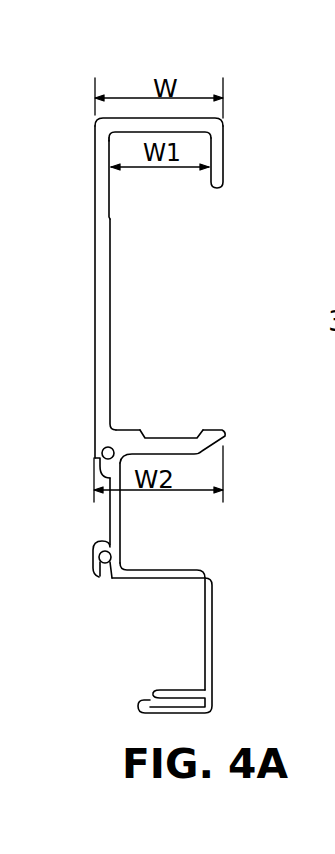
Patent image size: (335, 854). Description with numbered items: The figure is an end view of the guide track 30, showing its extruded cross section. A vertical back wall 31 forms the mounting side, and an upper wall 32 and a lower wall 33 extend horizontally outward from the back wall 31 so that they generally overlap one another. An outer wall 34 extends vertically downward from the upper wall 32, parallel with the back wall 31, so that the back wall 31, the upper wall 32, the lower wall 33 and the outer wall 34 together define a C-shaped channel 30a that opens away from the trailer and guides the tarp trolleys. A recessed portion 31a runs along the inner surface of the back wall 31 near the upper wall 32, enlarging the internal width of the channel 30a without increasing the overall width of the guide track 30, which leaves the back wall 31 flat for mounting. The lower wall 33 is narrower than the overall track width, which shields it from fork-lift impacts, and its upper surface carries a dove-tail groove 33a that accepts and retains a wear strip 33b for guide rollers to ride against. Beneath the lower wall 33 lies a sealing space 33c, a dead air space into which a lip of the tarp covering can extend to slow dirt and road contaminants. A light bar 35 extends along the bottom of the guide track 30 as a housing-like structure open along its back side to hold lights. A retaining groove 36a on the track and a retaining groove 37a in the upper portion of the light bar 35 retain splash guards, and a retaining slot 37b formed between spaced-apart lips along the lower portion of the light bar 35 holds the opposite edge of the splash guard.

The guide track 30 is at (237, 113).
The channel 30a is at (214, 275).
The back wall 31 is at (102, 297).
The recessed portion 31a is at (108, 193).
The upper wall 32 is at (143, 127).
The lower wall 33 is at (222, 431).
The groove 33a is at (184, 434).
The wear strip 33b is at (0, 213).
The sealing space 33c is at (188, 513).
The outer wall 34 is at (222, 158).
The light bar 35 is at (213, 620).
The retaining groove 36a is at (102, 450).
The retaining groove 37a is at (101, 561).
The retaining slot 37b is at (162, 702).